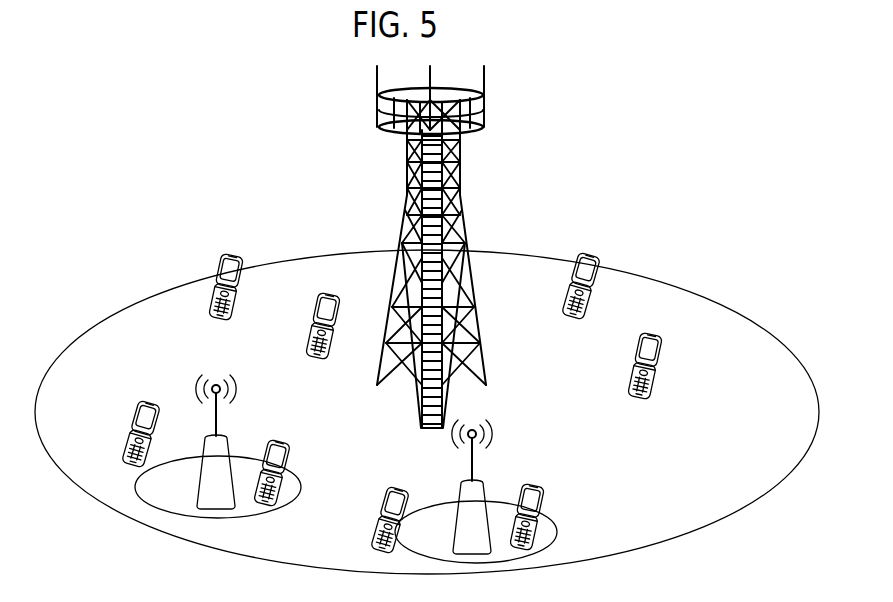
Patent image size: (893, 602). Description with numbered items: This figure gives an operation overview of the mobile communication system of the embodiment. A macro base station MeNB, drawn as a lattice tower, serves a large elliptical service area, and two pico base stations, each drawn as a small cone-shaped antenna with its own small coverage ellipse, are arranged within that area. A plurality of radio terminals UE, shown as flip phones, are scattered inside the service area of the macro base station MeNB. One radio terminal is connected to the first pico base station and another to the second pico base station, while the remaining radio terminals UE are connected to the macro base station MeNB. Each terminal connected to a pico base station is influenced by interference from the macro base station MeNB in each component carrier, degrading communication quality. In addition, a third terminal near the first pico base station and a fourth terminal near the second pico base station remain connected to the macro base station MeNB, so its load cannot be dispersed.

The macro base station MeNB is at (405, 180).
The radio terminal UE is at (656, 374).